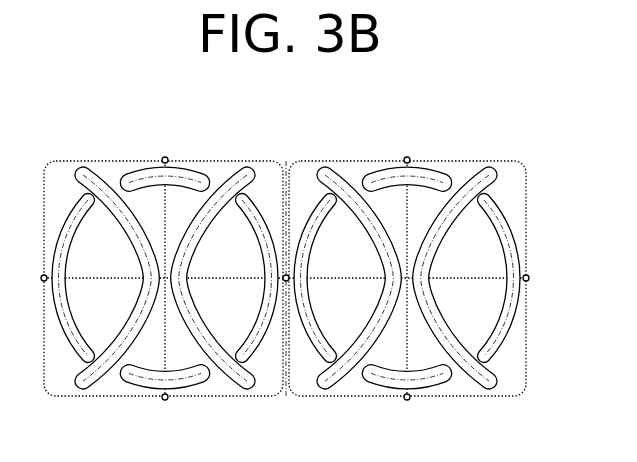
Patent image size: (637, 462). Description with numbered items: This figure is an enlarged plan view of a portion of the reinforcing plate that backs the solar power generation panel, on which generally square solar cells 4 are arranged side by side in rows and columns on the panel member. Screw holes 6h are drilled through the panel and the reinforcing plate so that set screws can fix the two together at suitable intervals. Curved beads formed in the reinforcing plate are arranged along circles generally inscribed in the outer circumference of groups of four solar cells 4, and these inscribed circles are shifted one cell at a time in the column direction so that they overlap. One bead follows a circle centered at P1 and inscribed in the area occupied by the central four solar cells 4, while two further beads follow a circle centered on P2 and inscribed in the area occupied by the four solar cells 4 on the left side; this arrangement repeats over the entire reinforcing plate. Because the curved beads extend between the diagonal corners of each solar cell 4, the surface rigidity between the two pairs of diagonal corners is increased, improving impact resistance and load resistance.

The solar cell 4 is at (63, 161).
The screw hole 6h is at (162, 157).
The center of circle α P1 is at (267, 267).
The center of circle β P2 is at (157, 268).